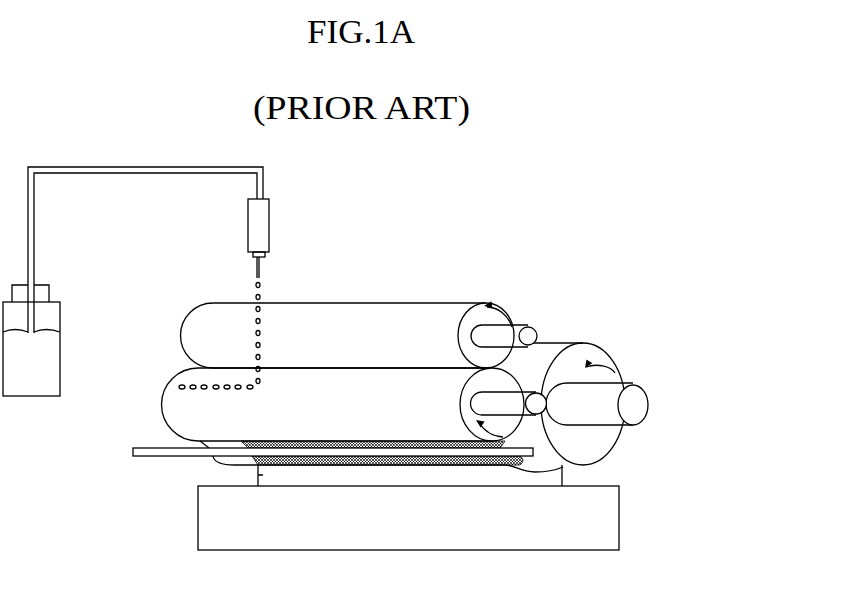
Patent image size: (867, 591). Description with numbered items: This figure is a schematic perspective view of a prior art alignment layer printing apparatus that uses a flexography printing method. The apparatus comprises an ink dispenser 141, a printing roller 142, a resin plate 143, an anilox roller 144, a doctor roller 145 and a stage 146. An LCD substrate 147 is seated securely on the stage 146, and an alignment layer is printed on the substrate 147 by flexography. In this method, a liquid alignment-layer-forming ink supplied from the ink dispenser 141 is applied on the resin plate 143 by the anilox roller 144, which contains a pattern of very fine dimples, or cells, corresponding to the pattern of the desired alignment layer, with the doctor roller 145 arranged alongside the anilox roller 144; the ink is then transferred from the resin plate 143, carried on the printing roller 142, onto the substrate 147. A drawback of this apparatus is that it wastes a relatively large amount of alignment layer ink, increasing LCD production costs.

The ink dispenser 141 is at (262, 210).
The printing roller 142 is at (605, 437).
The resin plate 143 is at (563, 467).
The anilox roller 144 is at (173, 420).
The doctor roller 145 is at (186, 337).
The stage 146 is at (608, 527).
The LCD substrate 147 is at (258, 475).